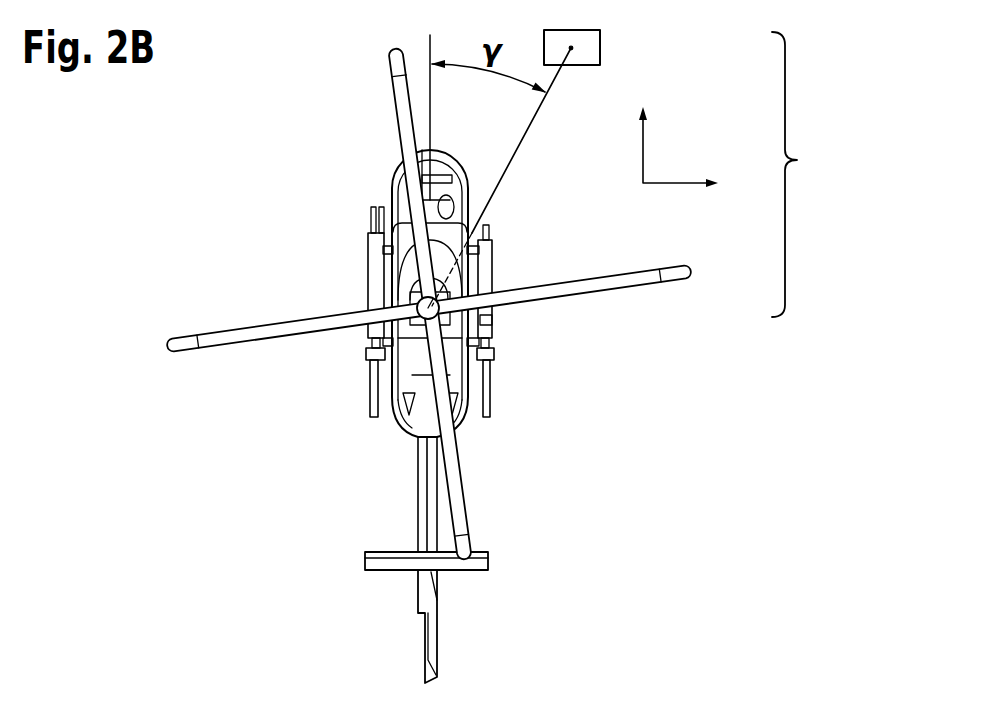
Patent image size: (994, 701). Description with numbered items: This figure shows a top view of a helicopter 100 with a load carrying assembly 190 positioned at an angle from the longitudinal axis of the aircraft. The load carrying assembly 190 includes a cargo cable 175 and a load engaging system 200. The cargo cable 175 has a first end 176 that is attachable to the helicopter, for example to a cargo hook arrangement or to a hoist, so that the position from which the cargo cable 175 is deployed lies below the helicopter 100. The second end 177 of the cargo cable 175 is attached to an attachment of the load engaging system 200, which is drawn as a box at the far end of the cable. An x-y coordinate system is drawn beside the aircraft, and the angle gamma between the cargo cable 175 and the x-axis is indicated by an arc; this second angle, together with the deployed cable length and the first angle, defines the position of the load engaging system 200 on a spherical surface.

The helicopter 100 is at (326, 238).
The cargo cable 175 is at (522, 142).
The first end 176 is at (495, 322).
The second end 177 is at (603, 58).
The load carrying assembly 190 is at (730, 174).
The load engaging system 200 is at (614, 42).